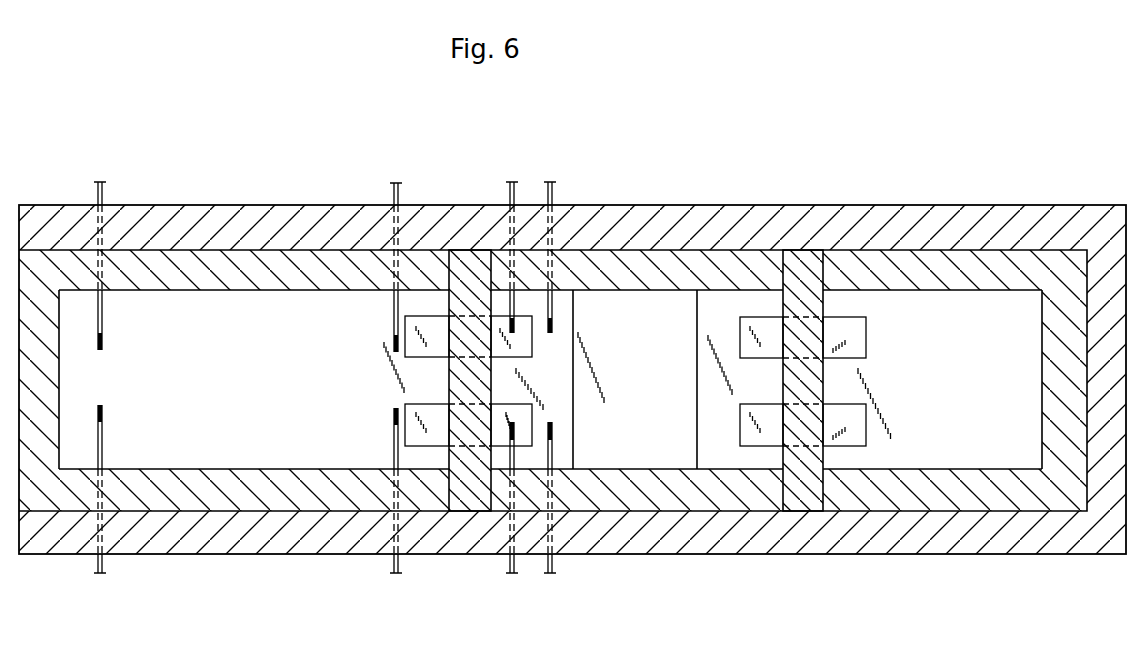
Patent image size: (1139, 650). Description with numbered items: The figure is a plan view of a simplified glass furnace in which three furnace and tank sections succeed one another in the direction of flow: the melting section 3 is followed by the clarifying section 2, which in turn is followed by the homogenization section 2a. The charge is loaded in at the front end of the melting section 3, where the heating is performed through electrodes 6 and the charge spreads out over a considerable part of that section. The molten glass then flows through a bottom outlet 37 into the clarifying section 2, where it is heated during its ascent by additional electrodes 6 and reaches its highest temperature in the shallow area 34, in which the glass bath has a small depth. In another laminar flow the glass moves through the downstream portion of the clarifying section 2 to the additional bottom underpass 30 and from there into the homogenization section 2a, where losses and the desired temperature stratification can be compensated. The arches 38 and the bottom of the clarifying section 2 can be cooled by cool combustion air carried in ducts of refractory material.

The clarifying section 2 is at (663, 448).
The homogenization section 2a is at (1015, 393).
The melting section 3 is at (267, 396).
The electrodes 6 is at (104, 331).
The bottom underpass 30 is at (860, 342).
The shallow area 34 is at (697, 416).
The bottom outlet 37 is at (521, 340).
The arches 38 is at (459, 378).